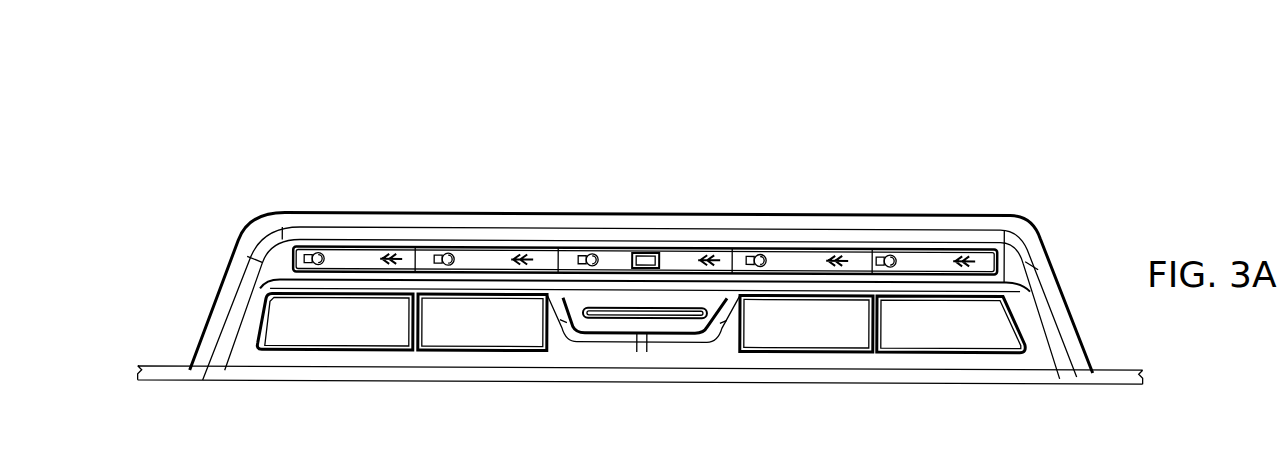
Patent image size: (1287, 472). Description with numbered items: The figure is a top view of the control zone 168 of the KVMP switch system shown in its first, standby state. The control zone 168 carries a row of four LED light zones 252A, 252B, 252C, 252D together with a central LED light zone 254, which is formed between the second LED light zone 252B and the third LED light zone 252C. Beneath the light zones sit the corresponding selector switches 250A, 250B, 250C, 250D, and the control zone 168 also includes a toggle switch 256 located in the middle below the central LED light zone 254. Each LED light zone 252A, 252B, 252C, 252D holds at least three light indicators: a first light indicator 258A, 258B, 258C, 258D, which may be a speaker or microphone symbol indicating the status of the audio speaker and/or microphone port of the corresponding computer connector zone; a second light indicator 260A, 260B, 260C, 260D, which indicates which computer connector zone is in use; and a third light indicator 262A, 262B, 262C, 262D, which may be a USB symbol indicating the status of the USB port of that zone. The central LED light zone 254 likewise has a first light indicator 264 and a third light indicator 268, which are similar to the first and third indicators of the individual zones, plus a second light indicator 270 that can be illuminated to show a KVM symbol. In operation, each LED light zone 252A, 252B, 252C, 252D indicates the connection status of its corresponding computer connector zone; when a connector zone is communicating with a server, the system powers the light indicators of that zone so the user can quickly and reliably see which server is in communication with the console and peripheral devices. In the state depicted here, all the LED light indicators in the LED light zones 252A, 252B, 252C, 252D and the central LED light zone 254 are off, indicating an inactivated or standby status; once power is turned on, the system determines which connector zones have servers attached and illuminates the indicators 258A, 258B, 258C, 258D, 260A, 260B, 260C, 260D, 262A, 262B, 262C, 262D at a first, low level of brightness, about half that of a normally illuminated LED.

The control zone 168 is at (864, 118).
The selector switch 250A is at (353, 335).
The selector switch 250B is at (485, 332).
The selector switch 250C is at (810, 328).
The selector switch 250D is at (962, 335).
The LED light zone 252A is at (376, 252).
The LED light zone 252B is at (508, 252).
The LED light zone 252C is at (822, 252).
The LED light zone 252D is at (953, 252).
The central LED light zone 254 is at (633, 242).
The toggle switch 256 is at (647, 323).
The first light indicator 258A is at (311, 252).
The first light indicator 258B is at (443, 252).
The first light indicator 258C is at (757, 252).
The first light indicator 258D is at (889, 252).
The second light indicator 260A is at (349, 252).
The second light indicator 260B is at (484, 252).
The second light indicator 260C is at (797, 252).
The second light indicator 260D is at (926, 252).
The third light indicator 262A is at (384, 252).
The third light indicator 262B is at (516, 252).
The third light indicator 262C is at (831, 252).
The third light indicator 262D is at (962, 252).
The first light indicator 264 is at (585, 252).
The third light indicator 268 is at (702, 254).
The second light indicator 270 is at (652, 252).